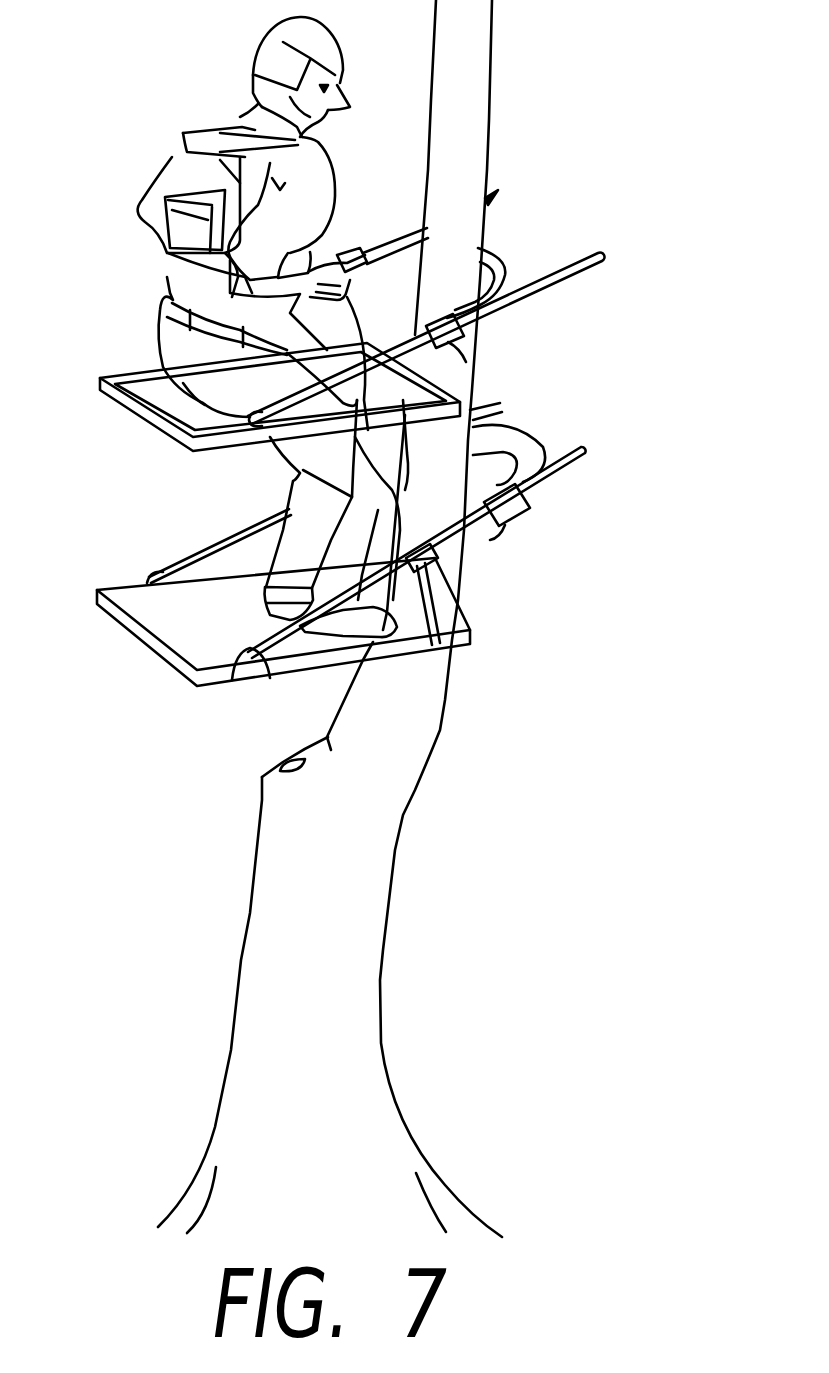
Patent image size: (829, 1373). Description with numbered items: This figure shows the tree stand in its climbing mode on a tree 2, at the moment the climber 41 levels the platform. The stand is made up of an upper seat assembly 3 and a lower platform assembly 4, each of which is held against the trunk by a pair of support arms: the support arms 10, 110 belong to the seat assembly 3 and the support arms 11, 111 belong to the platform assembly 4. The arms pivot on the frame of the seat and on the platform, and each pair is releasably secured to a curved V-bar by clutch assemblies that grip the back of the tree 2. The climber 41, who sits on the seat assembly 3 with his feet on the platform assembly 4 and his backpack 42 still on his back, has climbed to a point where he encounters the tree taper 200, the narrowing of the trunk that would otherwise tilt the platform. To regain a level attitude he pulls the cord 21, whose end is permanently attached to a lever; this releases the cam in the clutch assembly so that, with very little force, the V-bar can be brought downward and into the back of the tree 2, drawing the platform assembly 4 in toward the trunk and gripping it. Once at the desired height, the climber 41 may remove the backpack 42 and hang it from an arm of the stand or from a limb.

The tree 2 is at (472, 100).
The seat assembly 3 is at (107, 428).
The platform assembly 4 is at (126, 659).
The support arm 10 is at (498, 193).
The support arm 11 is at (493, 413).
The cord 21 is at (480, 533).
The climber 41 is at (217, 122).
The backpack 42 is at (185, 227).
The support arm 110 is at (570, 275).
The support arm 111 is at (573, 460).
The tree taper 200 is at (305, 729).